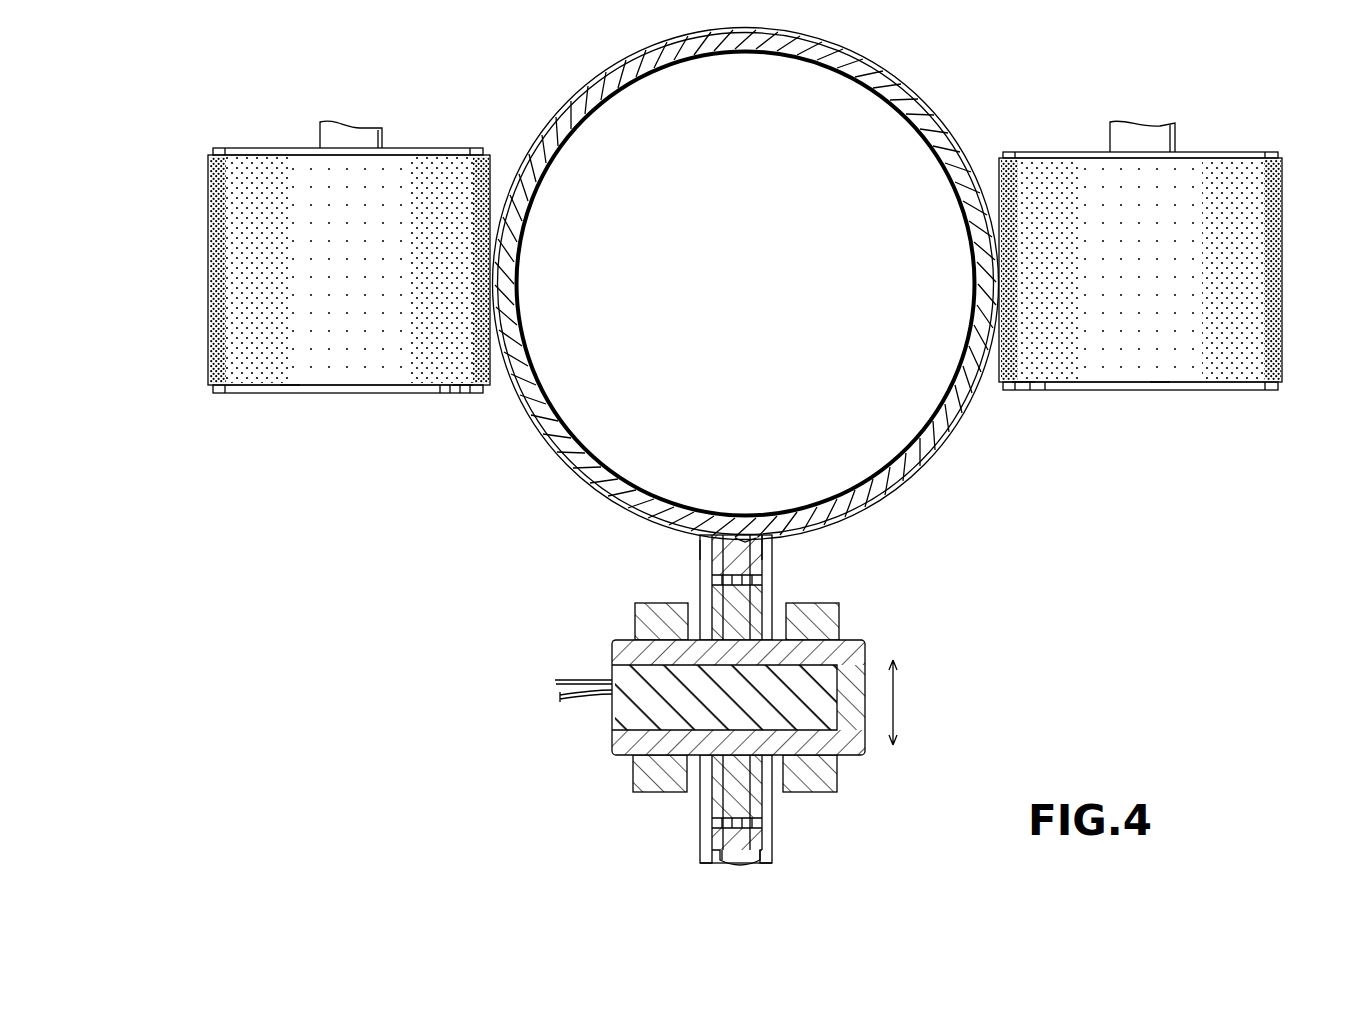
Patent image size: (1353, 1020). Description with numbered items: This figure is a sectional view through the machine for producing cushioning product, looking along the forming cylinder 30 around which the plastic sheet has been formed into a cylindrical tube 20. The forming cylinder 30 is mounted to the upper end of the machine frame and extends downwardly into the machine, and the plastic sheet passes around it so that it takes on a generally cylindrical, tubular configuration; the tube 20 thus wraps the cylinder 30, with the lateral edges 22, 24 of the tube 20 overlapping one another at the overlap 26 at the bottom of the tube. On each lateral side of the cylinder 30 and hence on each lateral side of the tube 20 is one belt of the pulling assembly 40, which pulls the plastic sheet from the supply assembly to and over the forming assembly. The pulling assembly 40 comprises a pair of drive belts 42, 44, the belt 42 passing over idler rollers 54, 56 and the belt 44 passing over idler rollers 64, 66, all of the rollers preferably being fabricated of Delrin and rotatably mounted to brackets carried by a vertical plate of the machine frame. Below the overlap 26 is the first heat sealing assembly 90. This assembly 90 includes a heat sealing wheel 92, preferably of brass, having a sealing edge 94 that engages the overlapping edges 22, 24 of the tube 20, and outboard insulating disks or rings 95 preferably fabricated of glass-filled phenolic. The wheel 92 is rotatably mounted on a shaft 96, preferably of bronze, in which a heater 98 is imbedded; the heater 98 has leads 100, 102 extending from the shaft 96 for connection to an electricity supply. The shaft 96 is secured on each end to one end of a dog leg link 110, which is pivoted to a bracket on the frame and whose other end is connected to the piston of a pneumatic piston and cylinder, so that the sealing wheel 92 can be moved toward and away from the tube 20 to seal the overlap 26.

The tube 20 is at (882, 64).
The forming cylinder 30 is at (650, 70).
The lateral edge 22 is at (752, 530).
The lateral edge 24 is at (775, 551).
The overlap 26 is at (700, 540).
The pulling assembly 40 is at (744, 248).
The drive belt 42 is at (208, 362).
The drive belt 44 is at (1283, 347).
The idler roller 54 is at (463, 393).
The idler roller 56 is at (290, 393).
The idler roller 64 is at (1024, 393).
The idler roller 66 is at (1160, 392).
The first heat sealing assembly 90 is at (692, 687).
The heat sealing wheel 92 is at (775, 822).
The sealing edge 94 is at (762, 540).
The insulating disks 95 is at (707, 860).
The shaft 96 is at (724, 718).
The heater 98 is at (635, 710).
The lead 100 is at (580, 680).
The lead 102 is at (560, 697).
The dog leg link 110 is at (840, 622).